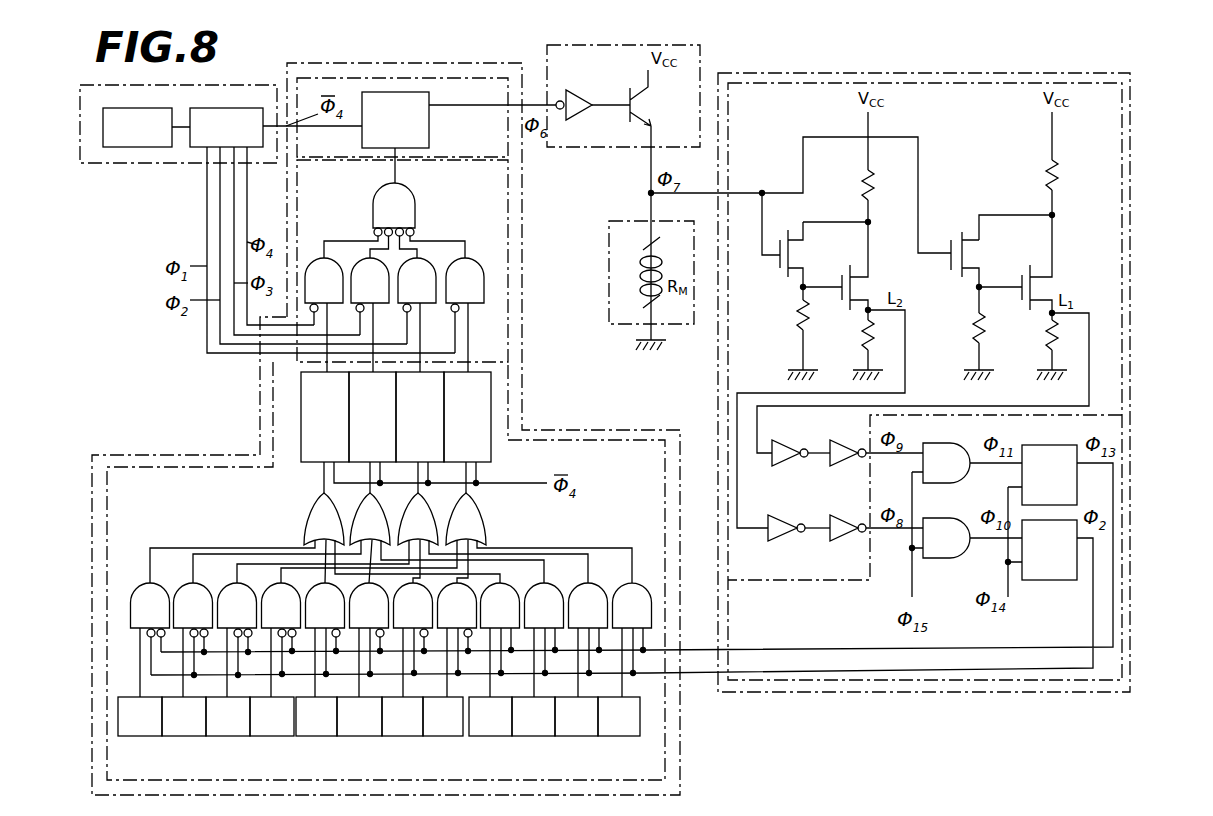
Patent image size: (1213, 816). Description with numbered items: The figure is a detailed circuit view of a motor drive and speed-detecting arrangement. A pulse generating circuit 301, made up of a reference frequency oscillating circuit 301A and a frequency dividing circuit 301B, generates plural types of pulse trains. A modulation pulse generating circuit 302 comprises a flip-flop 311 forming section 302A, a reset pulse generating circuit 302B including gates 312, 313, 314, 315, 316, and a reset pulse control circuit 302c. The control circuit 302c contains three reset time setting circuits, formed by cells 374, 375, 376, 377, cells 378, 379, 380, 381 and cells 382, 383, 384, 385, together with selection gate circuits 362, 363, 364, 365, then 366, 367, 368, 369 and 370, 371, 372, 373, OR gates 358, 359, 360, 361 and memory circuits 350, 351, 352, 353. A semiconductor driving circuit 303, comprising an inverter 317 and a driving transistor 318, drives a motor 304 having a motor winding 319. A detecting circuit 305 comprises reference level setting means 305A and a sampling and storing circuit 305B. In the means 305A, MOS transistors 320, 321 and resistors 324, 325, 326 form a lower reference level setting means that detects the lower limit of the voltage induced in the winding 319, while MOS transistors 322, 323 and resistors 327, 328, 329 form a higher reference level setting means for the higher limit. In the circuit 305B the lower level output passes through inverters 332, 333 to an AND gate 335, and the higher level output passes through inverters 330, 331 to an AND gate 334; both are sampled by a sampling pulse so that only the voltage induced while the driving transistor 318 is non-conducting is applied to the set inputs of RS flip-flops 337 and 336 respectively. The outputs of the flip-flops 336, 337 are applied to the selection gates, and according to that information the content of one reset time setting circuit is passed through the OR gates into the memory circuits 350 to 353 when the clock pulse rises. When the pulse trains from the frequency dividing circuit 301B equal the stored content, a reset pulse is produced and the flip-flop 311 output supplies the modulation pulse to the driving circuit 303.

The pulse generating circuit 301 is at (244, 85).
The reference frequency oscillating circuit 301A is at (137, 127).
The frequency dividing circuit 301B is at (226, 127).
The modulation pulse generating circuit 302 is at (390, 63).
The flip-flop 302A is at (306, 78).
The reset pulse generating circuit 302B is at (510, 212).
The reset pulse control circuit 302c is at (586, 438).
The semiconductor driving circuit 303 is at (608, 147).
The motor 304 is at (609, 270).
The detecting circuit 305 is at (884, 73).
The reference level setting means 305A is at (1125, 268).
The sampling and storing circuit 305B is at (1127, 516).
The flip-flop 311 is at (429, 126).
The gate 312 is at (394, 220).
The gate 313 is at (324, 315).
The gate 314 is at (370, 315).
The gate 315 is at (417, 315).
The gate 316 is at (465, 315).
The inverter 317 is at (572, 92).
The driving transistor 318 is at (659, 98).
The motor winding 319 is at (638, 293).
The MOS transistor 320 is at (795, 258).
The MOS transistor 321 is at (856, 290).
The MOS transistor 322 is at (970, 258).
The MOS transistor 323 is at (1041, 290).
The resistor 324 is at (875, 185).
The resistor 325 is at (810, 340).
The resistor 326 is at (895, 350).
The resistor 327 is at (1045, 176).
The resistor 328 is at (985, 346).
The resistor 329 is at (1062, 350).
The inverter 330 is at (787, 436).
The inverter 331 is at (844, 436).
The inverter 332 is at (784, 511).
The inverter 333 is at (844, 511).
The AND gate 334 is at (967, 463).
The AND gate 335 is at (967, 538).
The RS flip-flop 336 is at (1028, 445).
The RS flip-flop 337 is at (1040, 580).
The memory circuit 350 is at (325, 417).
The memory circuit 351 is at (372, 417).
The memory circuit 352 is at (420, 417).
The memory circuit 353 is at (467, 417).
The OR gate 358 is at (324, 519).
The OR gate 359 is at (370, 519).
The OR gate 360 is at (418, 519).
The OR gate 361 is at (466, 519).
The selection gate 362 is at (150, 640).
The selection gate 363 is at (193, 640).
The selection gate 364 is at (237, 640).
The selection gate 365 is at (281, 640).
The selection gate 366 is at (325, 640).
The selection gate 367 is at (369, 640).
The selection gate 368 is at (413, 640).
The selection gate 369 is at (457, 640).
The selection gate 370 is at (500, 640).
The selection gate 371 is at (544, 640).
The selection gate 372 is at (588, 640).
The selection gate 373 is at (632, 640).
The reset time setting circuit 374 is at (134, 737).
The reset time setting circuit 375 is at (181, 737).
The reset time setting circuit 376 is at (225, 737).
The reset time setting circuit 377 is at (270, 737).
The reset time setting circuit 378 is at (316, 737).
The reset time setting circuit 379 is at (360, 737).
The reset time setting circuit 380 is at (402, 737).
The reset time setting circuit 381 is at (446, 737).
The reset time setting circuit 382 is at (489, 737).
The reset time setting circuit 383 is at (534, 737).
The reset time setting circuit 384 is at (576, 737).
The reset time setting circuit 385 is at (620, 737).